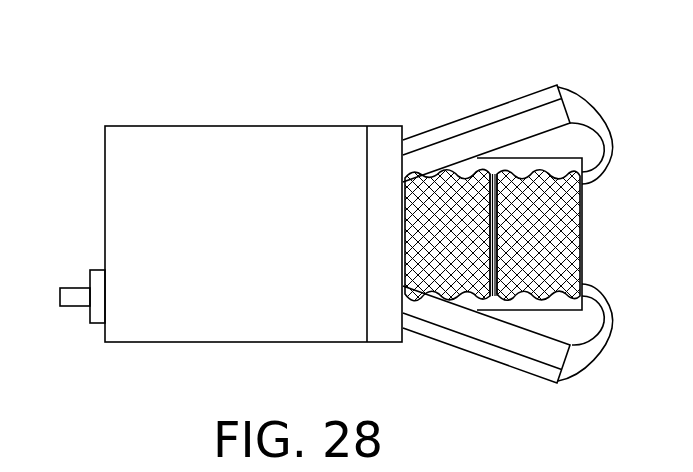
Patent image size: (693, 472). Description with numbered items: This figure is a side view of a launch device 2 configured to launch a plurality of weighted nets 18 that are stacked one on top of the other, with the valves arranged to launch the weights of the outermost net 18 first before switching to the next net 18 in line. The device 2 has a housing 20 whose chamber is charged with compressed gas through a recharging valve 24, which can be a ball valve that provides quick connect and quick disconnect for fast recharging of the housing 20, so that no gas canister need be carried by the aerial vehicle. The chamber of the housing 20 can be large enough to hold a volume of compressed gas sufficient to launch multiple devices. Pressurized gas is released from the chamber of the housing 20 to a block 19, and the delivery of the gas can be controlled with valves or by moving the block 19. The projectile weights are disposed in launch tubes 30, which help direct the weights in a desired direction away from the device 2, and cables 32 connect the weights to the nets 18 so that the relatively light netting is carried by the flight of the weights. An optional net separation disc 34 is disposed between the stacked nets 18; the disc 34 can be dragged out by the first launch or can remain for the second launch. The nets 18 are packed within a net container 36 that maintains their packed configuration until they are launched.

The launch device 2 is at (234, 95).
The net 18 is at (470, 232).
The block 19 is at (387, 330).
The housing 20 is at (258, 308).
The recharging valve 24 is at (70, 297).
The launch tubes 30 is at (502, 133).
The cables 32 is at (600, 113).
The net separation disc 34 is at (495, 265).
The net container 36 is at (568, 165).